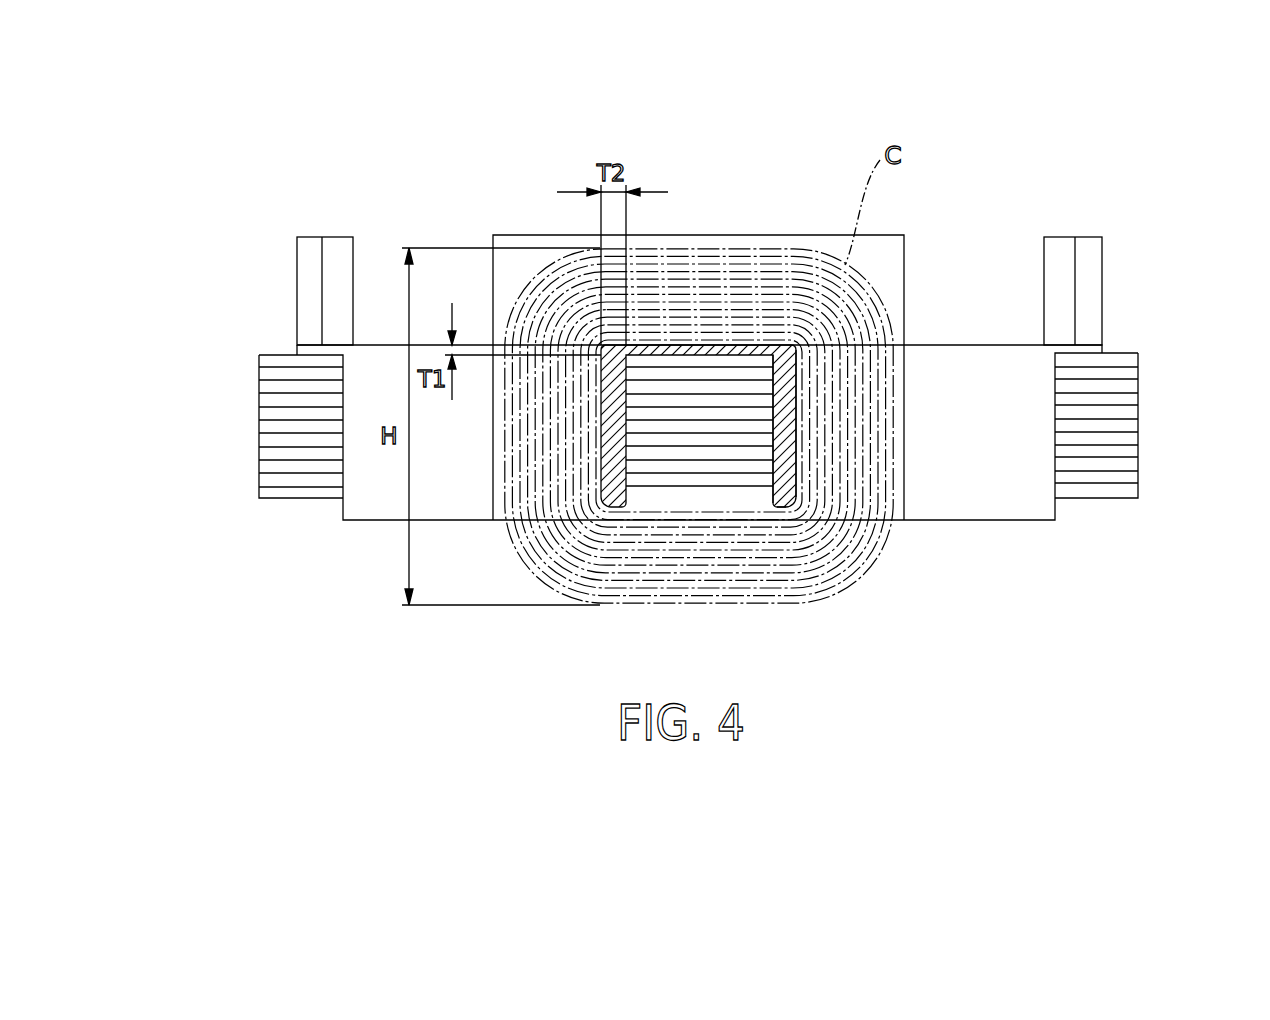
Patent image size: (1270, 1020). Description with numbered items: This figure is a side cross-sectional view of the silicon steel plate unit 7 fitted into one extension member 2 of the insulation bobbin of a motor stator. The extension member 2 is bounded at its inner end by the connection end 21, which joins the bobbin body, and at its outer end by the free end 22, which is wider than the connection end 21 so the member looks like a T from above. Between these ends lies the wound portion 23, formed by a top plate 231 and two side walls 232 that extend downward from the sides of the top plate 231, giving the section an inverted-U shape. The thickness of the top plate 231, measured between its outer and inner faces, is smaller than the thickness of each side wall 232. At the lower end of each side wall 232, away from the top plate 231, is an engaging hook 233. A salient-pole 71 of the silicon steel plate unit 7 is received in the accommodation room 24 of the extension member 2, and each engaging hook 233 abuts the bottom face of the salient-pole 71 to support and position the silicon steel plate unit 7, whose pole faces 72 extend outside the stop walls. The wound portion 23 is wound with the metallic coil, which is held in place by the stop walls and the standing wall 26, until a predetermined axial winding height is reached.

The extension member 2 is at (337, 207).
The connection end 21 is at (495, 400).
The free end 22 is at (297, 348).
The wound portion 23 is at (737, 509).
The top plate 231 is at (720, 350).
The side wall 232 is at (787, 427).
The engaging hook 233 is at (785, 500).
The accommodation room 24 is at (322, 510).
The standing wall 26 is at (297, 262).
The silicon steel plate unit 7 is at (1135, 343).
The salient-pole 71 is at (668, 480).
The pole face 72 is at (1138, 403).